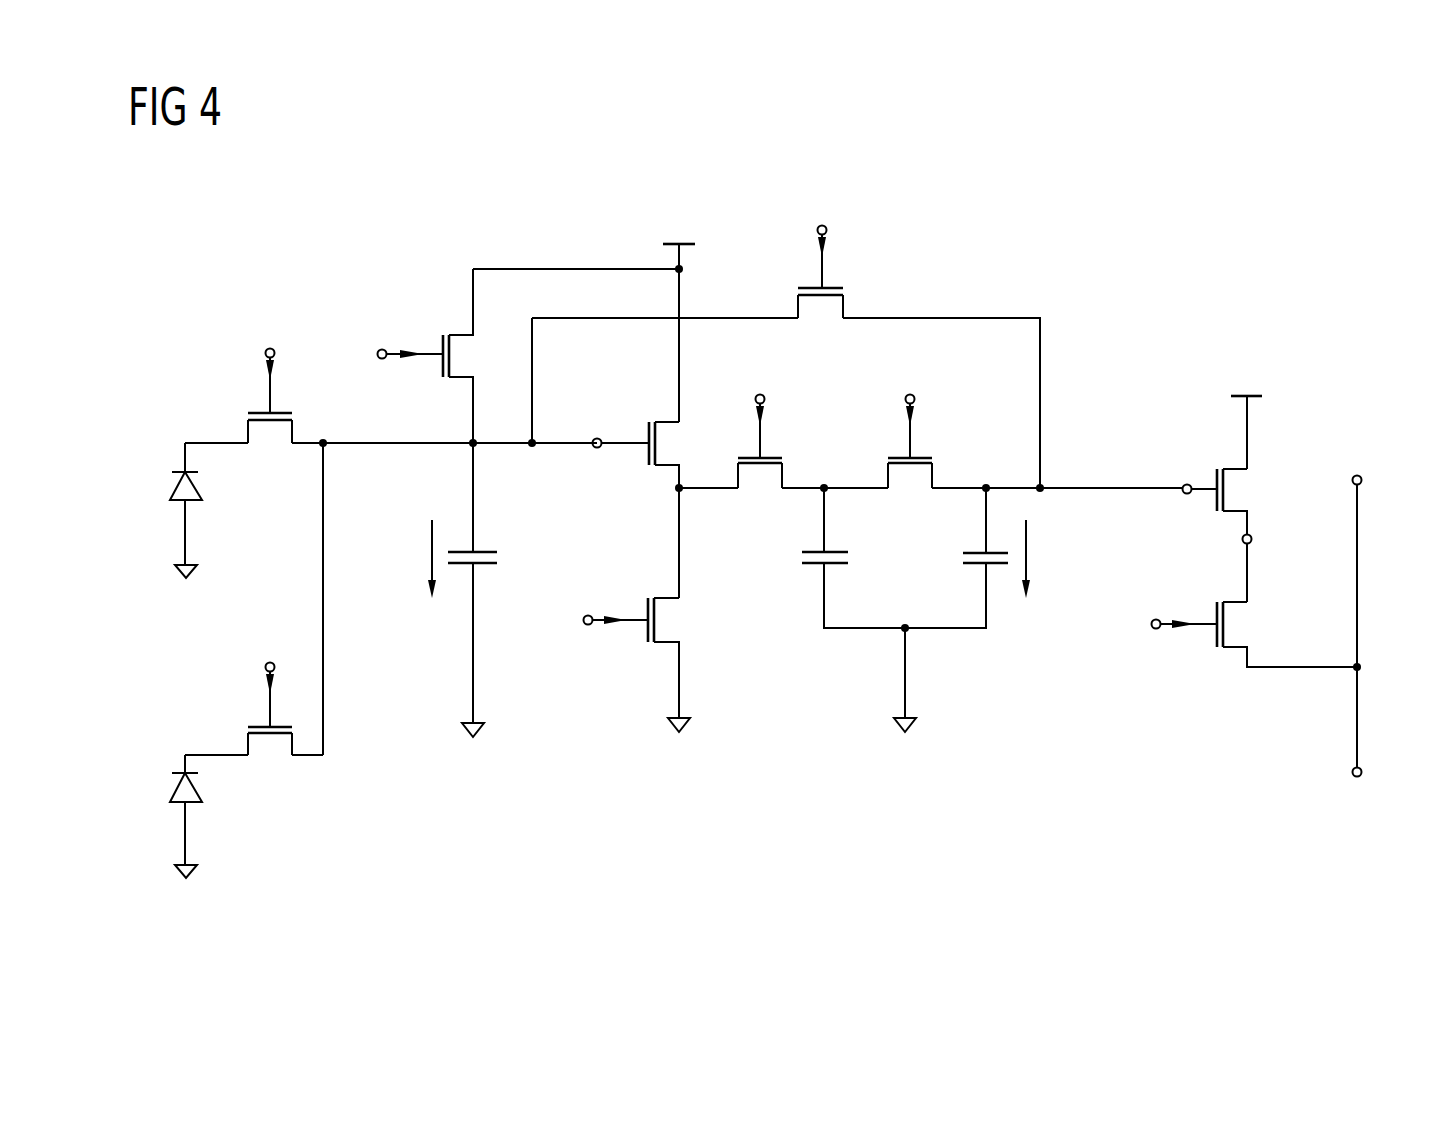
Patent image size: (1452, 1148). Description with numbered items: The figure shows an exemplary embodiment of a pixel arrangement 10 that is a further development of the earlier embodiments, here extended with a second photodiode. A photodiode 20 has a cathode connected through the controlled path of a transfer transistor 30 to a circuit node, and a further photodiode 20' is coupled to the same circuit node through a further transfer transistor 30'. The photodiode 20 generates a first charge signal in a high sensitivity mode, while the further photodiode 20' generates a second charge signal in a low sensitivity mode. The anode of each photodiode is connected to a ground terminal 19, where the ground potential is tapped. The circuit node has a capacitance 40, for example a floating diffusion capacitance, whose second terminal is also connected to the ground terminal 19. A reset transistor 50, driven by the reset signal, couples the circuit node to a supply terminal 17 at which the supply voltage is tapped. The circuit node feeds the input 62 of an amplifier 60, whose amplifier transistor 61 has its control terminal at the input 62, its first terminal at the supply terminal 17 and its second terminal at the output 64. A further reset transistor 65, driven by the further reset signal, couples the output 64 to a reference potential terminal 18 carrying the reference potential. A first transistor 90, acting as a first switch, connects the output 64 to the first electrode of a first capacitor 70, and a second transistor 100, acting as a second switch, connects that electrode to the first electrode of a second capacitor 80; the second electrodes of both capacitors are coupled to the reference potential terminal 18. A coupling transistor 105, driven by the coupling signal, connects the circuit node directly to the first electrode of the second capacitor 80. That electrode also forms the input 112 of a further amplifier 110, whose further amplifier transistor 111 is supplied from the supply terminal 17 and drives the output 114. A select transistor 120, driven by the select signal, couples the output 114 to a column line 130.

The pixel arrangement 10 is at (978, 180).
The supply terminal 17 is at (686, 247).
The reference potential terminal 18 is at (683, 713).
The ground terminal 19 is at (191, 558).
The photodiode 20 is at (166, 504).
The further photodiode 20' is at (163, 803).
The transfer transistor 30 is at (270, 402).
The further transfer transistor 30' is at (273, 716).
The capacitance 40 is at (497, 558).
The reset transistor 50 is at (455, 356).
The amplifier 60 is at (626, 390).
The amplifier transistor 61 is at (660, 445).
The input 62 is at (595, 449).
The output 64 is at (674, 490).
The further reset transistor 65 is at (660, 622).
The first capacitor 70 is at (802, 556).
The second capacitor 80 is at (963, 557).
The first transistor 90 is at (760, 467).
The second transistor 100 is at (910, 467).
The coupling transistor 105 is at (822, 298).
The further amplifier 110 is at (1184, 420).
The further amplifier transistor 111 is at (1228, 490).
The input 112 is at (1187, 494).
The output 114 is at (1252, 540).
The select transistor 120 is at (1228, 626).
The column line 130 is at (1360, 570).